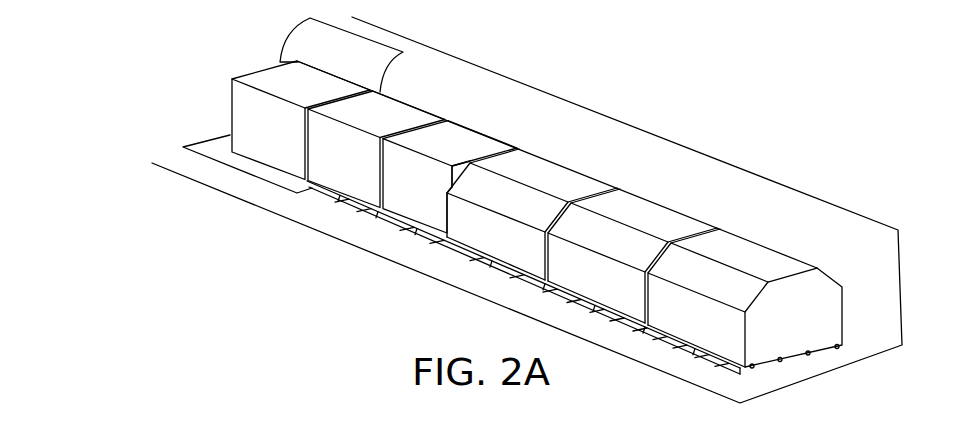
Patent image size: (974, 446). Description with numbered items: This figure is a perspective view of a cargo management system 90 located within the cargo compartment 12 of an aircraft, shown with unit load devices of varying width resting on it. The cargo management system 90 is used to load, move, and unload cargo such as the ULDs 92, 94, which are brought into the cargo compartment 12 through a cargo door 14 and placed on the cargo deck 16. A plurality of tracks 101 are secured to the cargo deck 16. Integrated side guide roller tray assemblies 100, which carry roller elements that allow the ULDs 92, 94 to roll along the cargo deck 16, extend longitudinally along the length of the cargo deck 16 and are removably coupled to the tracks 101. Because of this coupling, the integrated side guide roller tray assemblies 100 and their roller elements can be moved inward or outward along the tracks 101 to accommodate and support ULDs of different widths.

The cargo compartment 12 is at (660, 148).
The cargo door 14 is at (382, 63).
The cargo deck 16 is at (230, 180).
The cargo management system 90 is at (208, 112).
The ULD 92 is at (393, 107).
The ULD 94 is at (547, 172).
The integrated side guide roller tray assembly 100 is at (320, 204).
The track 101 is at (380, 226).